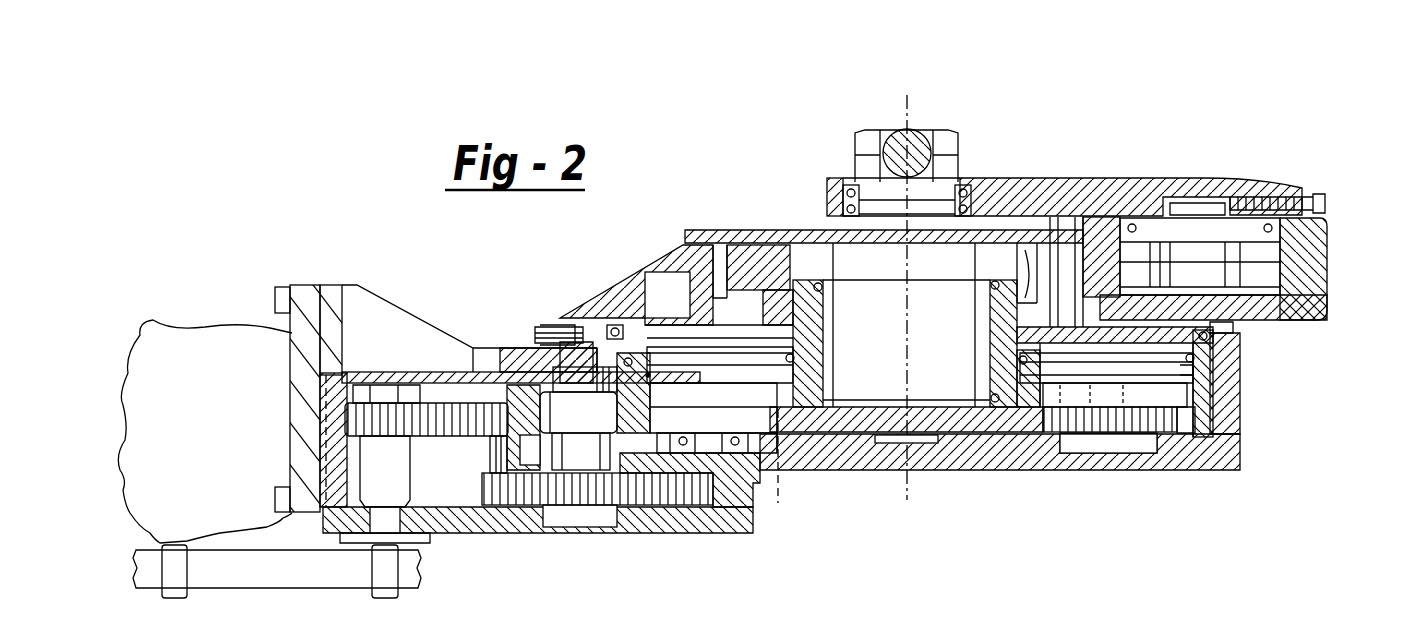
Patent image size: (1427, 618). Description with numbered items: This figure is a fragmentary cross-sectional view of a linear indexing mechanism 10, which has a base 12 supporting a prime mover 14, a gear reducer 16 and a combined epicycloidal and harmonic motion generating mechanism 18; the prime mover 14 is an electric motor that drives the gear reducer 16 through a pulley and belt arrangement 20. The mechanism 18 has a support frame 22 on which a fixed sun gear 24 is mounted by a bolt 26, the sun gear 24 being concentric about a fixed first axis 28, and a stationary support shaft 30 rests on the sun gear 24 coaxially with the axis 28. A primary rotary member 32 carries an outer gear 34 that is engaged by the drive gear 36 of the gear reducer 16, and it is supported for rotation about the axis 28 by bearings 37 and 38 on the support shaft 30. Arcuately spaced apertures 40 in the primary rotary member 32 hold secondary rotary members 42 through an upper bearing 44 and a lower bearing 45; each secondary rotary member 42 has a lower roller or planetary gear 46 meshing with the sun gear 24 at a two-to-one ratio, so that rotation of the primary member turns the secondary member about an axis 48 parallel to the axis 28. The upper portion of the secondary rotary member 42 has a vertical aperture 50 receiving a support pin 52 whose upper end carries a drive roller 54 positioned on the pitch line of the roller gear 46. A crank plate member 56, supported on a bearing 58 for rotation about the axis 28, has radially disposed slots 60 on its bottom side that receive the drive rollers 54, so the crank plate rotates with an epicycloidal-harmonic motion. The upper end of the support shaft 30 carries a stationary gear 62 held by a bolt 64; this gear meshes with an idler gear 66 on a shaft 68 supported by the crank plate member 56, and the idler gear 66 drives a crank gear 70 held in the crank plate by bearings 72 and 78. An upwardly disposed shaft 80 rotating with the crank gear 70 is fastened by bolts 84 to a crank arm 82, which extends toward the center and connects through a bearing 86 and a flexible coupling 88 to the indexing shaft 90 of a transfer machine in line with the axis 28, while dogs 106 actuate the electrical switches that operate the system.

The linear indexing mechanism 10 is at (673, 192).
The base 12 is at (751, 533).
The prime mover 14 is at (202, 347).
The gear reducer 16 is at (470, 408).
The combined epicycloidal and harmonic motion generating mechanism 18 is at (1262, 403).
The pulley and belt arrangement 20 is at (297, 572).
The support frame 22 is at (1037, 470).
The fixed sun gear 24 is at (947, 393).
The bolt 26 is at (785, 470).
The fixed first axis 28 is at (907, 483).
The stationary support shaft 30 is at (967, 390).
The primary rotary member 32 is at (1207, 363).
The outer gear 34 is at (617, 417).
The drive gear 36 is at (542, 403).
The bearing 37 is at (850, 403).
The bearing 38 is at (837, 288).
The apertures 40 is at (650, 400).
The secondary rotary member 42 is at (1037, 352).
The upper bearing 44 is at (800, 365).
The lower bearing 45 is at (723, 440).
The roller or planetary gear 46 is at (750, 417).
The axis 48 is at (713, 457).
The vertical aperture 50 is at (648, 373).
The support pin 52 is at (673, 363).
The drive roller 54 is at (650, 360).
The crank plate member 56 is at (1328, 282).
The bearing 58 is at (1213, 335).
The radially disposed slots 60 is at (738, 352).
The stationary gear 62 is at (737, 280).
The bolt 64 is at (990, 257).
The idler gear 66 is at (1105, 257).
The shaft 68 is at (1060, 230).
The crank gear 70 is at (1297, 263).
The bearing 72 is at (1123, 232).
The bearing 78 is at (1227, 295).
The shaft 80 is at (1213, 197).
The crank arm 82 is at (1133, 178).
The bolts 84 is at (1270, 185).
The bearing 86 is at (963, 180).
The flexible coupling 88 is at (953, 140).
The indexing shaft 90 is at (910, 130).
The dogs 106 is at (547, 325).